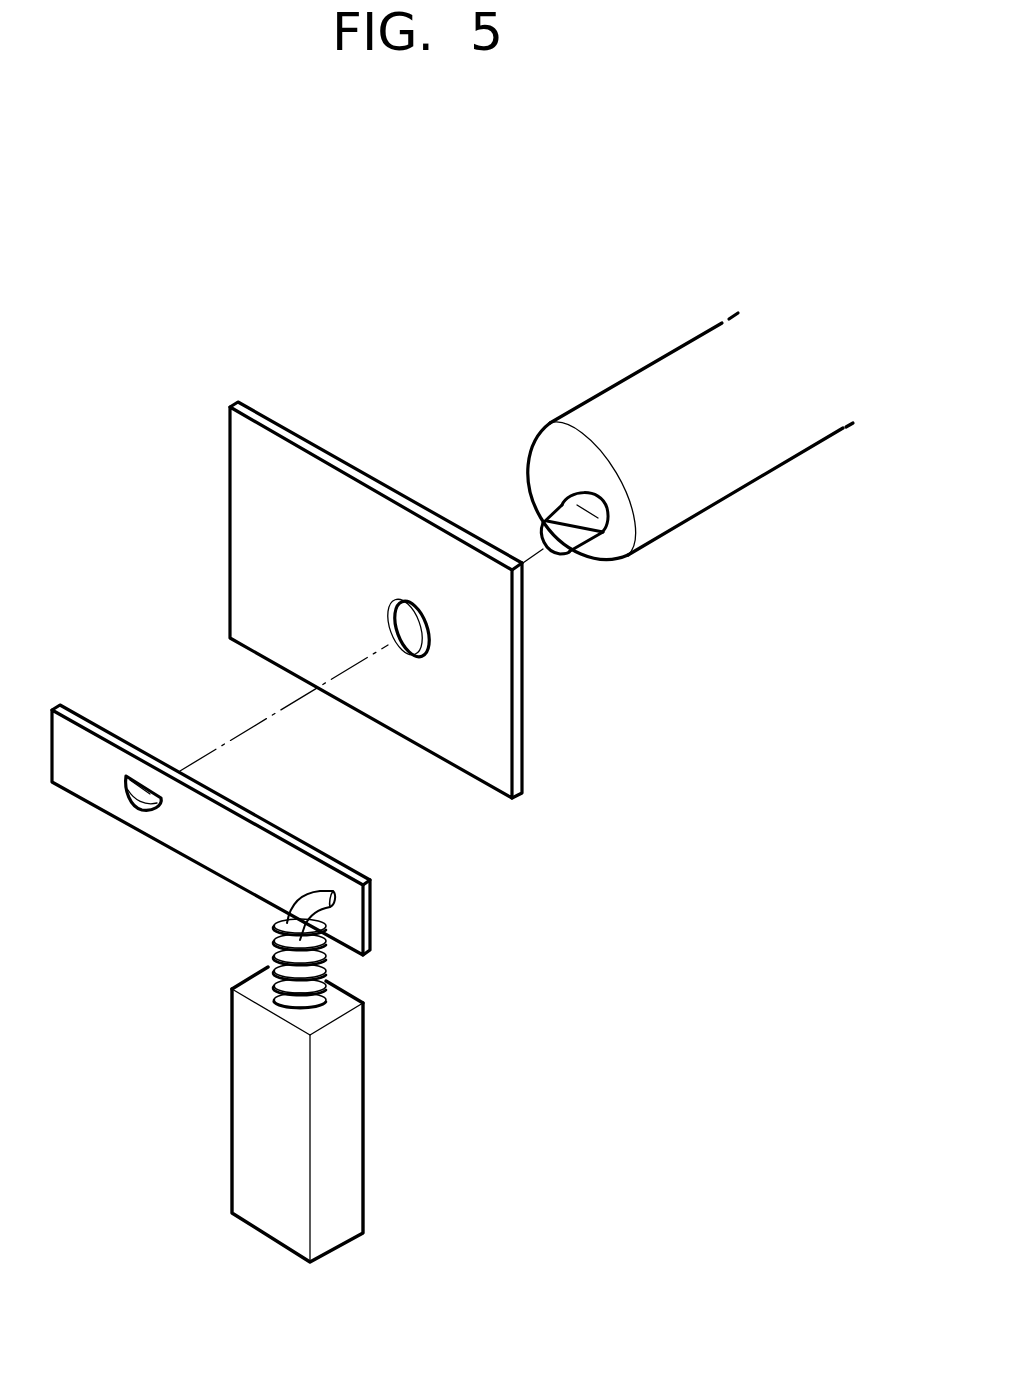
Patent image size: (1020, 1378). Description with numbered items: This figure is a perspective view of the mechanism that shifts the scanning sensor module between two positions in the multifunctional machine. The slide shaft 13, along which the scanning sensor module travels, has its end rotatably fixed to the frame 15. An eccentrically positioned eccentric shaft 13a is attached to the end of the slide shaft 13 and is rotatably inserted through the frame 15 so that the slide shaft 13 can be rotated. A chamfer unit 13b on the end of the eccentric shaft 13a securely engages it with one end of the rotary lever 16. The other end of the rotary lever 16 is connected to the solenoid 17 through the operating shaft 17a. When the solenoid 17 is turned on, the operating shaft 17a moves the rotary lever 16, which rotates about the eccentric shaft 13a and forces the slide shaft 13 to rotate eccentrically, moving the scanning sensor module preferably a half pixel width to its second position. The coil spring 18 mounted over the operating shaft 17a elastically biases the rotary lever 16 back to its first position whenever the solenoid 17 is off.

The slide shaft 13 is at (733, 463).
The eccentric shaft 13a is at (625, 553).
The chamfer unit 13b is at (567, 553).
The frame 15 is at (250, 625).
The rotary lever 16 is at (193, 823).
The solenoid 17 is at (243, 1152).
The operating shaft 17a is at (317, 908).
The coil spring 18 is at (325, 968).